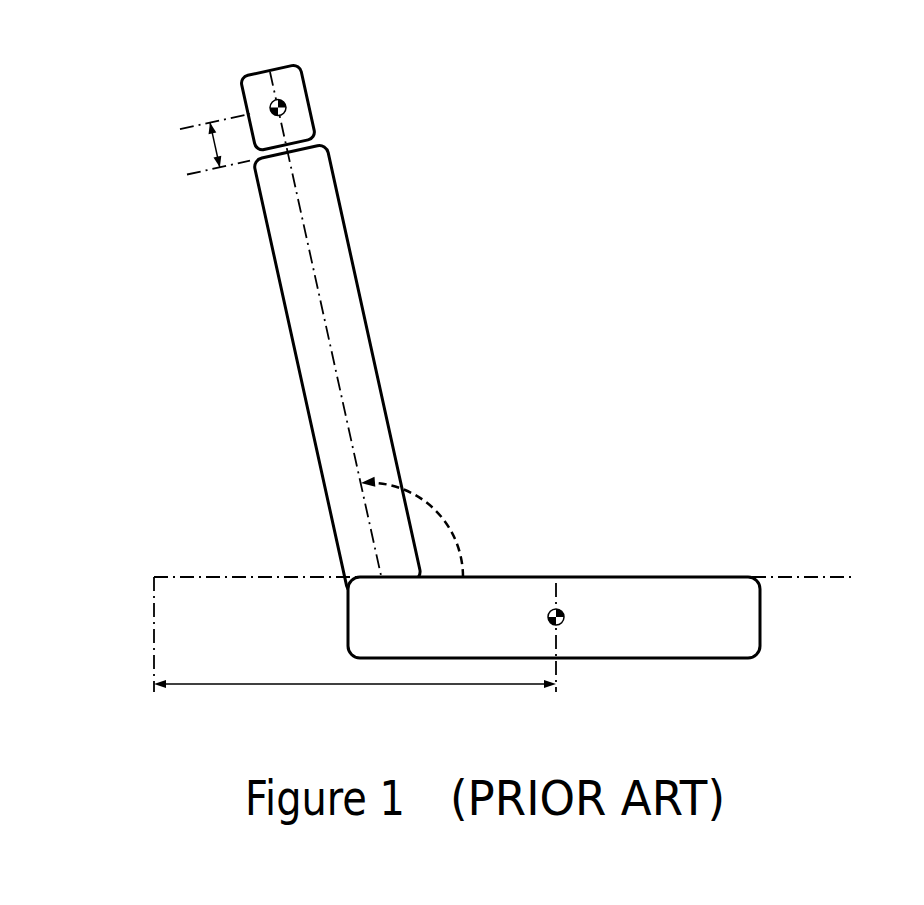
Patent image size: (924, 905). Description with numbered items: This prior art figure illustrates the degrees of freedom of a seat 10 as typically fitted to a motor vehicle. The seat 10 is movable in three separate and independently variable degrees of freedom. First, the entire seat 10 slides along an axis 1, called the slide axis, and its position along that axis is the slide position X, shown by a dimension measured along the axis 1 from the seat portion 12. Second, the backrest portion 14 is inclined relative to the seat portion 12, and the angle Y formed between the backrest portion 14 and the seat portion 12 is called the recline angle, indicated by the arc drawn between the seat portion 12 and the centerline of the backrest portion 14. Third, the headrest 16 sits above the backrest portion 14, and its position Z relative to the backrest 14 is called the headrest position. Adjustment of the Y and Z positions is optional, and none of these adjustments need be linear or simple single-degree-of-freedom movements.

The axis 1 is at (827, 575).
The seat 10 is at (131, 77).
The seat portion 12 is at (730, 648).
The backrest portion 14 is at (347, 295).
The headrest 16 is at (300, 122).